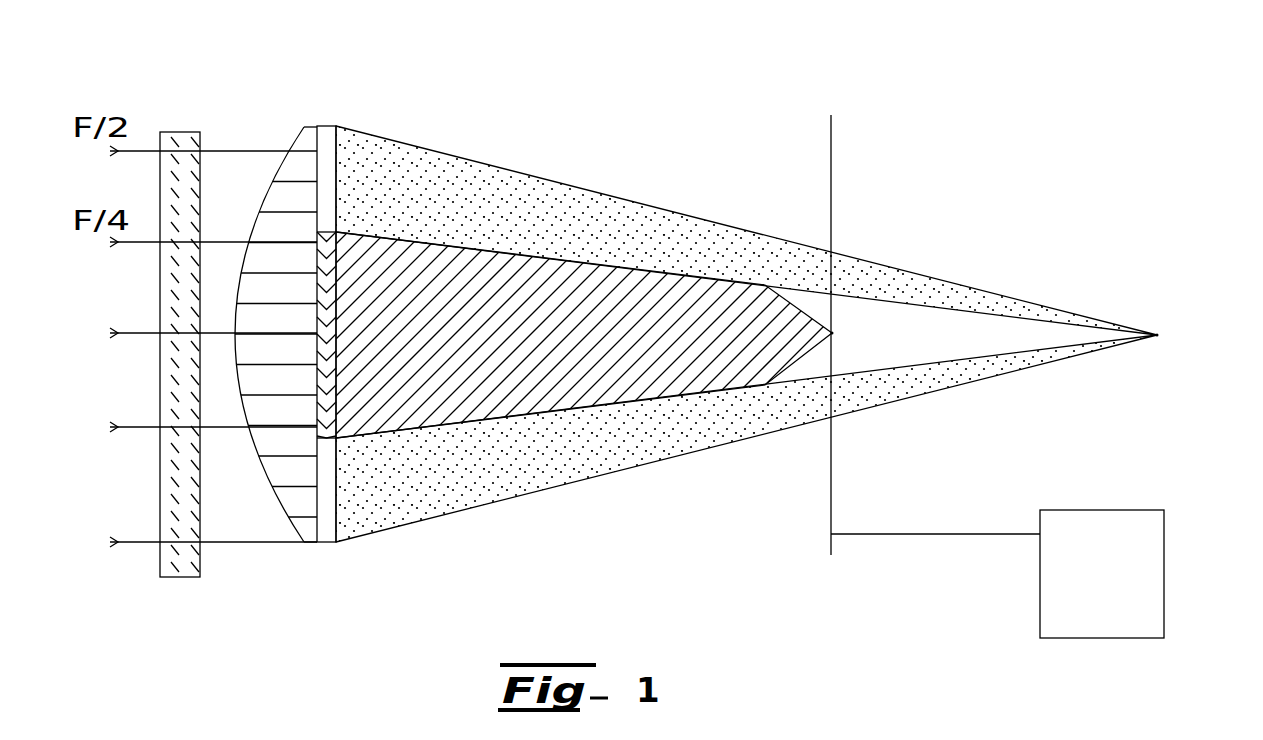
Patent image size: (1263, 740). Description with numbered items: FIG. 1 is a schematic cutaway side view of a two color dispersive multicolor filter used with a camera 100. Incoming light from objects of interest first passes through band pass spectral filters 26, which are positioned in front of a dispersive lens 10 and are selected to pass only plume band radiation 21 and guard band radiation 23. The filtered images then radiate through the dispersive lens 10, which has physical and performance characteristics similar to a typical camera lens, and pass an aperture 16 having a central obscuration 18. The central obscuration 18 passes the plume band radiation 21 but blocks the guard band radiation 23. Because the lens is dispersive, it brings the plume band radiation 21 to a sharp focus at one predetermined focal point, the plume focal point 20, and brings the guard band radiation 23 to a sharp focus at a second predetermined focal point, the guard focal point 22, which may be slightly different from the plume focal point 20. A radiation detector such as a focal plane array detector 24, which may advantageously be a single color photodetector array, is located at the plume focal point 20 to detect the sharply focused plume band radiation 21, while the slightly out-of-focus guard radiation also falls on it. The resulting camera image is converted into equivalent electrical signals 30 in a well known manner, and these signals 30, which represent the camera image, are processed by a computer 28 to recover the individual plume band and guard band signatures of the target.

The camera 100 is at (1088, 46).
The band pass spectral filters 26 is at (178, 137).
The dispersive lens 10 is at (305, 143).
The aperture 16 is at (317, 545).
The central obscuration 18 is at (327, 232).
The guard band radiation 23 is at (532, 228).
The plume band radiation 21 is at (571, 312).
The plume focal point 20 is at (832, 333).
The guard focal point 22 is at (1157, 335).
The focal plane array detector 24 is at (831, 547).
The electrical signals 30 is at (940, 534).
The computer 28 is at (1164, 578).